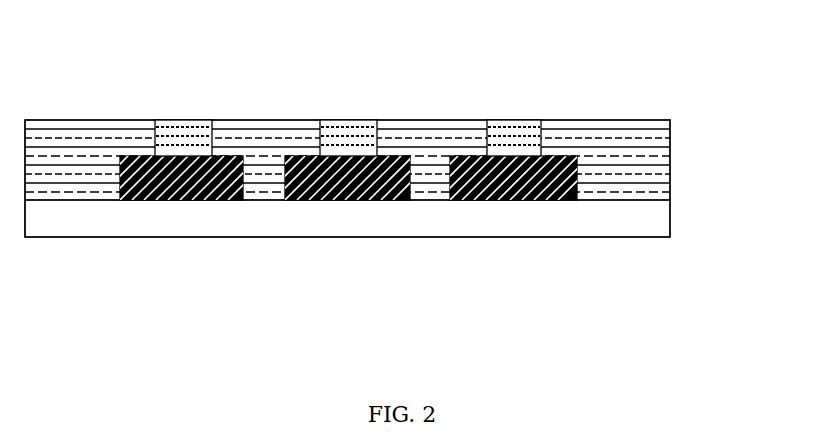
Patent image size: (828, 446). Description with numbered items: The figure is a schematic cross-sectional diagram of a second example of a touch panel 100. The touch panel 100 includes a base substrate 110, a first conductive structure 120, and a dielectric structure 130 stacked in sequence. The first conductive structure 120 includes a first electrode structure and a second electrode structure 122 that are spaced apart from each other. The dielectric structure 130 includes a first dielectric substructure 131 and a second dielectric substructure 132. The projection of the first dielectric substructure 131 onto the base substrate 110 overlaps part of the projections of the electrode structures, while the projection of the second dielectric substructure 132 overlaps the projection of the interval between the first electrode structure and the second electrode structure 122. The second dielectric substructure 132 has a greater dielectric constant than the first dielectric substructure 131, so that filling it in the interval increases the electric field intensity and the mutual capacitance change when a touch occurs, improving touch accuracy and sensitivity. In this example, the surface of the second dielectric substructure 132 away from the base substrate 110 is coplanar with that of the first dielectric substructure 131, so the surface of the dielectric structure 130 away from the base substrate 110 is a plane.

The touch panel 100 is at (81, 80).
The base substrate 110 is at (655, 221).
The first conductive structure 120 is at (343, 243).
The second electrode structure 122 is at (350, 200).
The dielectric structure 130 is at (347, 171).
The first dielectric substructure 131 is at (348, 113).
The second dielectric substructure 132 is at (593, 120).